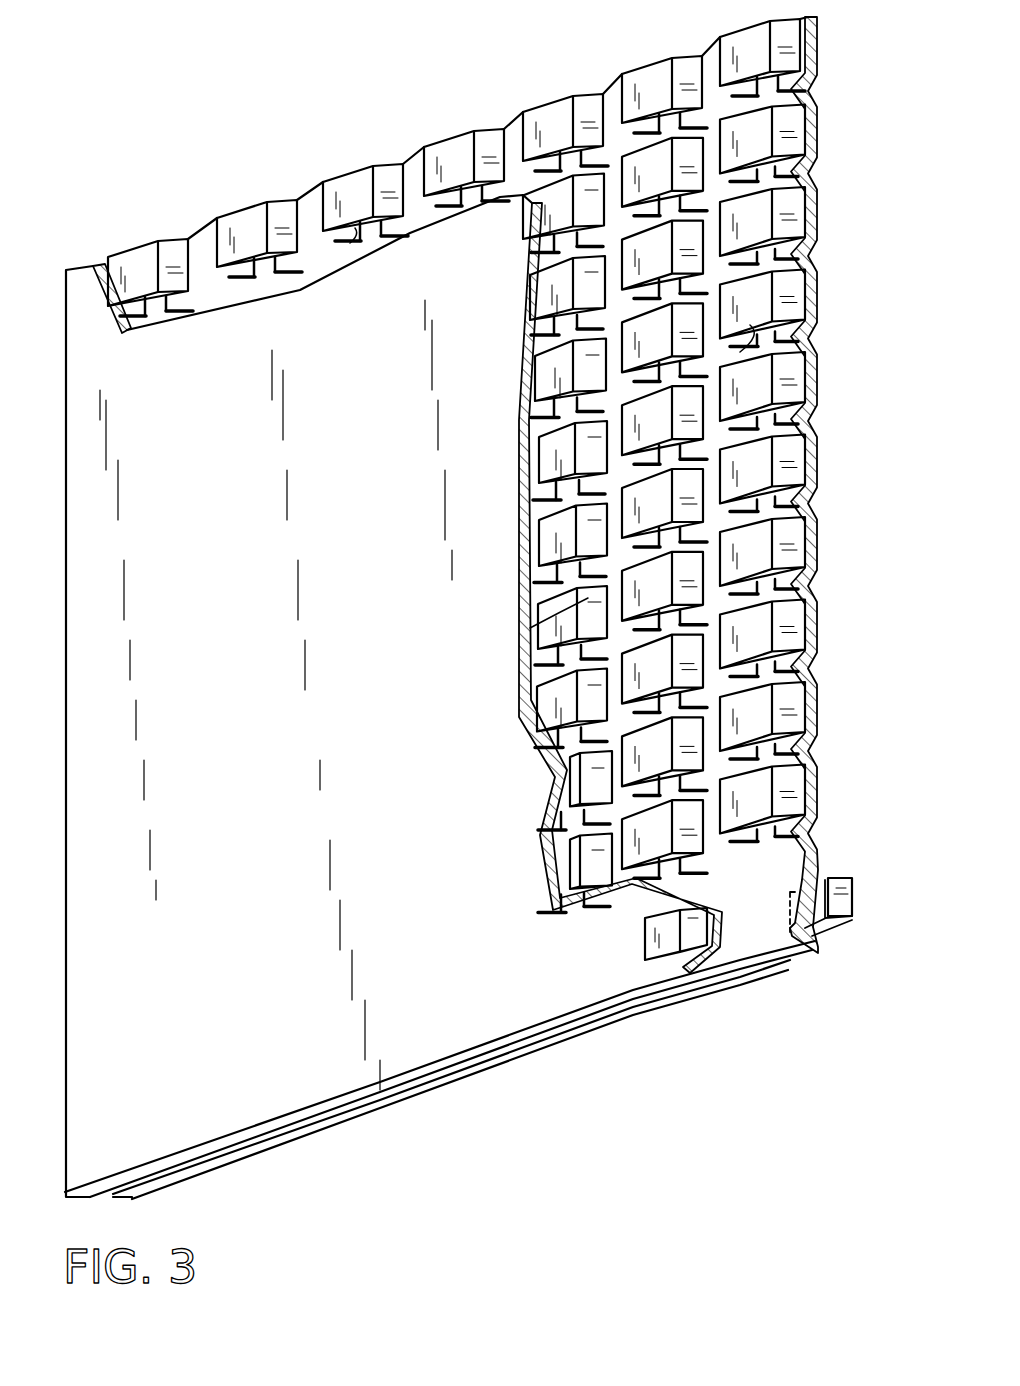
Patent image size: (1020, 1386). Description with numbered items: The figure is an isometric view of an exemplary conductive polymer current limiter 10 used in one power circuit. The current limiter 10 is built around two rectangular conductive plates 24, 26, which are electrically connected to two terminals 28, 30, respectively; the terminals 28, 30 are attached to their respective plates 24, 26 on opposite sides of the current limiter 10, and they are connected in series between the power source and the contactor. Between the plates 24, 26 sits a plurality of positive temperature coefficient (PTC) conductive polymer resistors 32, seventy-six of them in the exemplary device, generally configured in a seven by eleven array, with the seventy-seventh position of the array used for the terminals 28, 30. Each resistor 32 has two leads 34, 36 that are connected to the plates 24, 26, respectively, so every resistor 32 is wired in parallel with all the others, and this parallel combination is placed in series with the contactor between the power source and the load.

The conductive polymer current limiter 10 is at (489, 1160).
The conductive plate 24 is at (737, 952).
The conductive plate 26 is at (482, 1017).
The terminal 28 is at (845, 918).
The terminal 30 is at (648, 930).
The positive temperature coefficient (PTC) conductive polymer resistor 32 is at (238, 226).
The lead 34 is at (391, 245).
The lead 36 is at (343, 240).